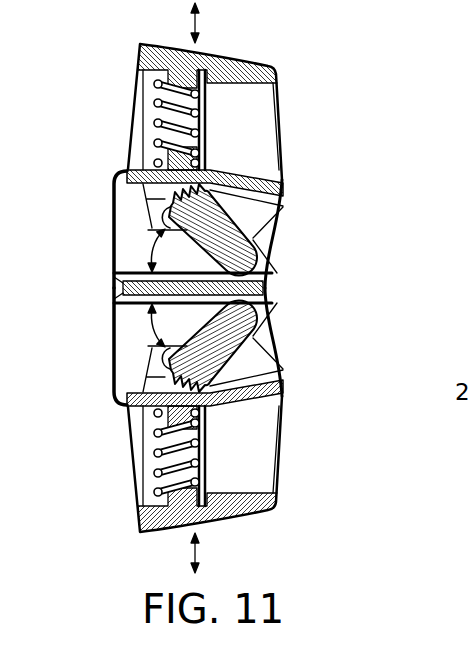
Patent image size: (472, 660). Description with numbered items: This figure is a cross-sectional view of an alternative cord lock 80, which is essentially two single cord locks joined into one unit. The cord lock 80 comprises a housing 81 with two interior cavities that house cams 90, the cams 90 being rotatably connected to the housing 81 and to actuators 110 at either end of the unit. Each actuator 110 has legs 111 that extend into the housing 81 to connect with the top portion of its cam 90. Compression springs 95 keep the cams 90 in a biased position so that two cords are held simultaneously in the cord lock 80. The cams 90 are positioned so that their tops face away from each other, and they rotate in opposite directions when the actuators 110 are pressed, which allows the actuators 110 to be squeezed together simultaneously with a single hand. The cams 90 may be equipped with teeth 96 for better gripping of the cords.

The cord lock 80 is at (225, 288).
The housing 81 is at (112, 320).
The cam 90 is at (260, 250).
The compression spring 95 is at (193, 127).
The teeth 96 is at (210, 403).
The actuator 110 is at (258, 64).
The leg 111 is at (160, 232).